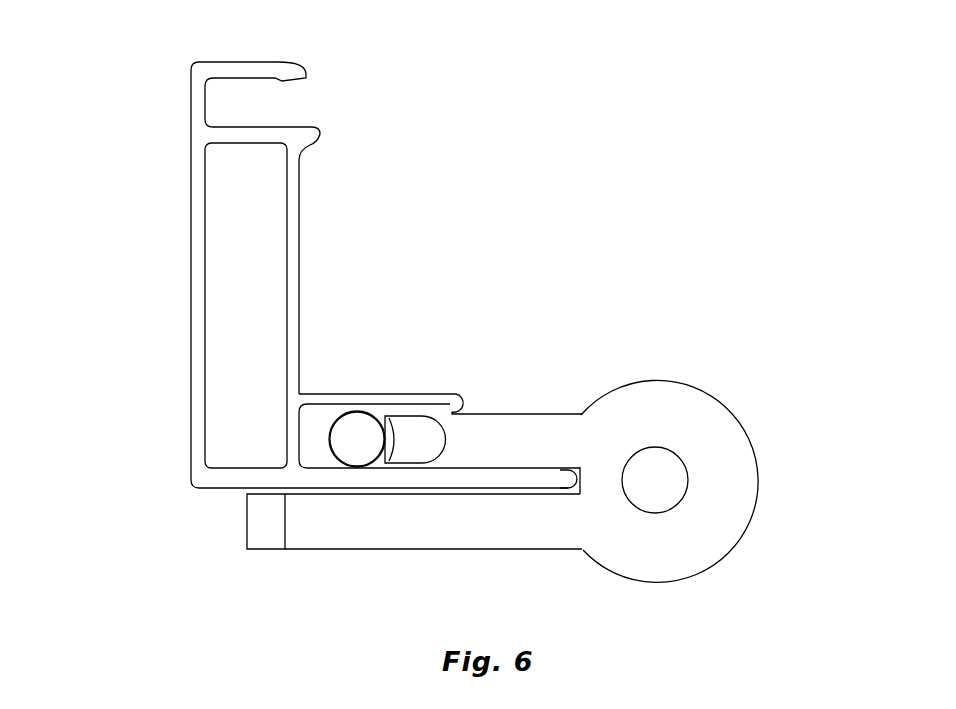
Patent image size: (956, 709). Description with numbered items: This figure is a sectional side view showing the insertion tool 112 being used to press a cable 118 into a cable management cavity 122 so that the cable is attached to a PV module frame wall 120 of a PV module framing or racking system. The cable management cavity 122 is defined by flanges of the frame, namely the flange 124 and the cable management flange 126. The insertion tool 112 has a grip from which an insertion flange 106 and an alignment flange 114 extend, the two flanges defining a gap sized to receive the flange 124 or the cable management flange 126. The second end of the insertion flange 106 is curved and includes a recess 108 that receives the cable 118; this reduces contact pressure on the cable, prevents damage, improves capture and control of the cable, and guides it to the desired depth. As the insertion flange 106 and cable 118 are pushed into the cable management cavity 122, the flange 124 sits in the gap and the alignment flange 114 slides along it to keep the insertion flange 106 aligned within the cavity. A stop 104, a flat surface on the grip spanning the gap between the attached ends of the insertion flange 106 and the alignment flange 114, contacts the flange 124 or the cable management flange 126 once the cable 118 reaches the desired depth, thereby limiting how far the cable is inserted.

The stop 104 is at (587, 483).
The insertion flange 106 is at (518, 423).
The recess 108 is at (412, 433).
The insertion tool 112 is at (705, 371).
The alignment flange 114 is at (250, 520).
The cable 118 is at (355, 432).
The PV module frame wall 120 is at (191, 92).
The cable management cavity 122 is at (318, 423).
The flange 124 is at (460, 478).
The cable management flange 126 is at (385, 400).